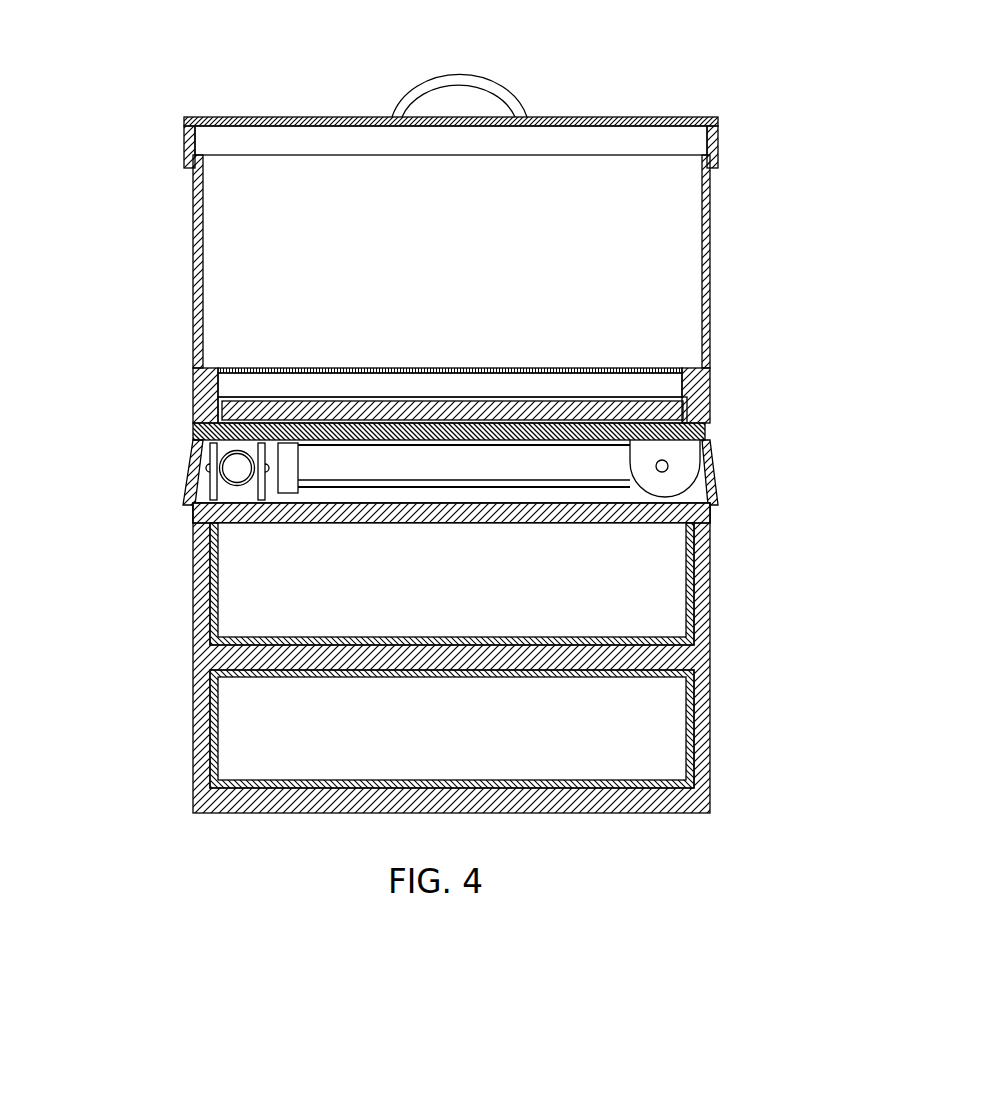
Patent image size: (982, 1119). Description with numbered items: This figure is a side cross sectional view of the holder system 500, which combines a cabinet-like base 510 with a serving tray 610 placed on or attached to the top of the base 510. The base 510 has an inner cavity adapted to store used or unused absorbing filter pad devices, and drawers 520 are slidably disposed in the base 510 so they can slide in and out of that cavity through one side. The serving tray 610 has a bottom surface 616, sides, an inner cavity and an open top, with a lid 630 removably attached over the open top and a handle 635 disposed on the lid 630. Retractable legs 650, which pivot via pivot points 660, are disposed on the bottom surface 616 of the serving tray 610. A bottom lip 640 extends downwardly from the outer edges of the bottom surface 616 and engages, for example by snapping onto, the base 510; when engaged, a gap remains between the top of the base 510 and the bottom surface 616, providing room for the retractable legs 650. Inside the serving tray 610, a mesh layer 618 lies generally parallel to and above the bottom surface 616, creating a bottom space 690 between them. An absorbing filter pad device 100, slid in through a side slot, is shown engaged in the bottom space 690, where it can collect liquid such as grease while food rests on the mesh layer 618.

The holder system 500 is at (232, 869).
The base 510 is at (193, 688).
The drawers 520 is at (230, 613).
The serving tray 610 is at (193, 238).
The bottom surface 616 is at (193, 427).
The mesh layer 618 is at (193, 375).
The lid 630 is at (255, 118).
The handle 635 is at (457, 82).
The bottom lip 640 is at (715, 500).
The retractable legs 650 is at (247, 511).
The pivot points 660 is at (222, 465).
The bottom space 690 is at (665, 383).
The absorbing filter pad device 100 is at (672, 410).